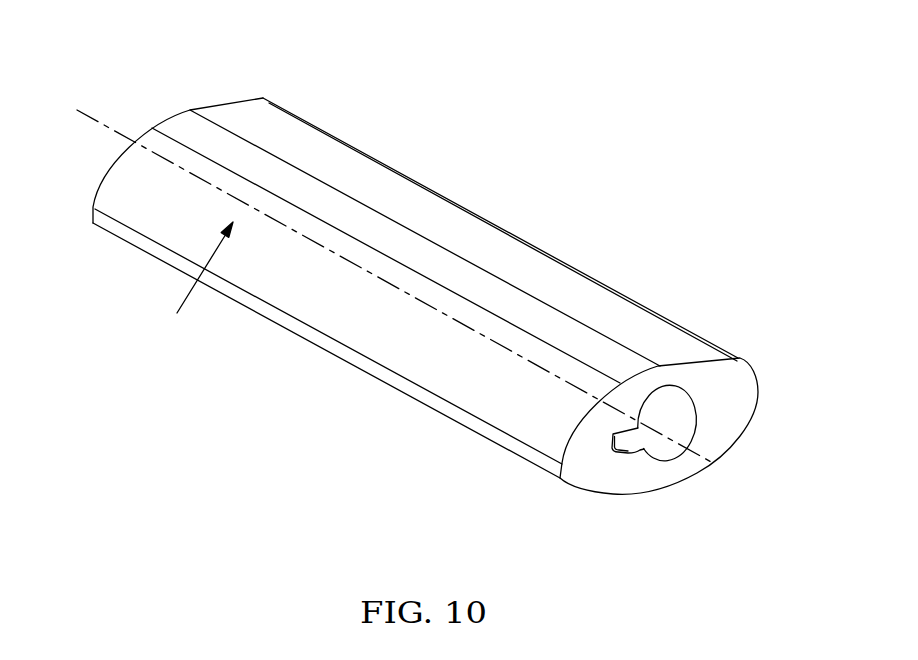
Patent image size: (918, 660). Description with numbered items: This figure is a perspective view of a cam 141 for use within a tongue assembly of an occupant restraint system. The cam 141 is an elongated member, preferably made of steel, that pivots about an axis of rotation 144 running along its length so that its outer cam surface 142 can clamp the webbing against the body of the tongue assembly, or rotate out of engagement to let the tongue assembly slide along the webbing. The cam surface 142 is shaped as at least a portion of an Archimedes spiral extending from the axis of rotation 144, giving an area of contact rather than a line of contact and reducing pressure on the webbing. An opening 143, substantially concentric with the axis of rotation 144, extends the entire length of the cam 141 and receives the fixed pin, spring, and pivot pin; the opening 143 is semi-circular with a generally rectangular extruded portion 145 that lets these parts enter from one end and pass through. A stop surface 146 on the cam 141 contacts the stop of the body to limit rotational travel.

The cam 141 is at (194, 282).
The cam surface 142 is at (122, 182).
The opening 143 is at (690, 419).
The axis of rotation 144 is at (93, 120).
The extruded portion 145 is at (620, 452).
The stop surface 146 is at (582, 487).